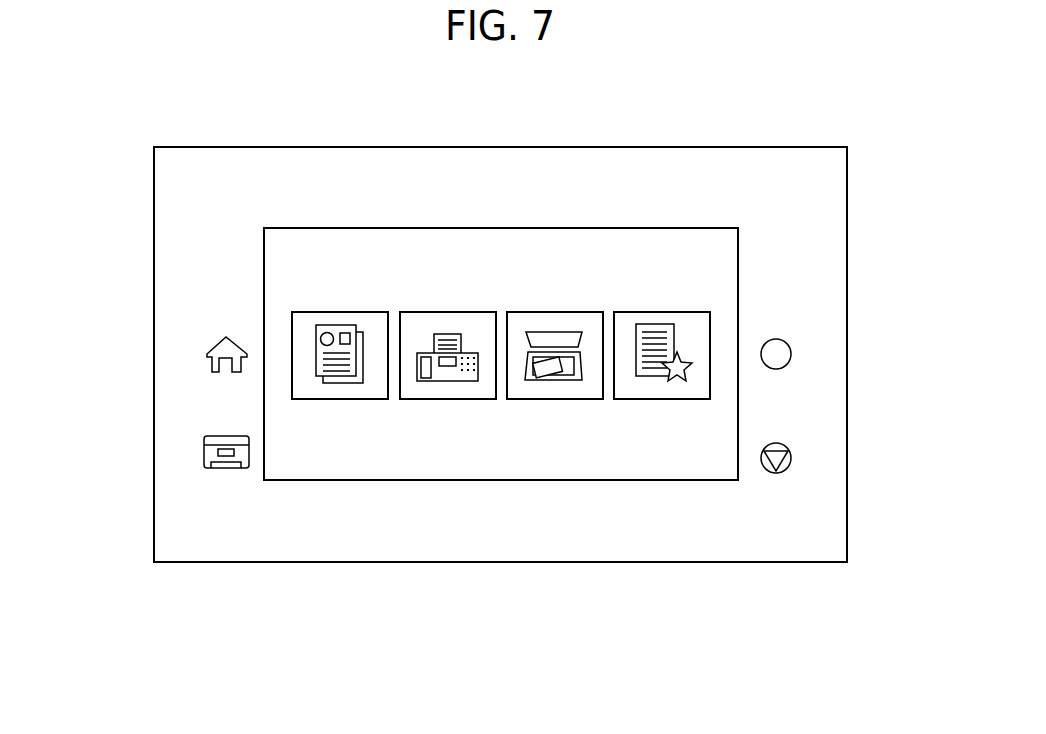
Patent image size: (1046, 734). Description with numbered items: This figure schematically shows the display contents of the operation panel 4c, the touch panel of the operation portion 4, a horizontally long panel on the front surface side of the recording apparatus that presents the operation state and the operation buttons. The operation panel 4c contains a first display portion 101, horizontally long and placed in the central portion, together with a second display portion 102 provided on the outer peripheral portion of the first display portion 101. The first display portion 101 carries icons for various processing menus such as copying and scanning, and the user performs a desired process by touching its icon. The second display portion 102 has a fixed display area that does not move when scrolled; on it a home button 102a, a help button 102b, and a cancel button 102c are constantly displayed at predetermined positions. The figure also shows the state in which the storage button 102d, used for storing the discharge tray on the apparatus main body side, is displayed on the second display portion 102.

The operation portion 4 is at (829, 131).
The operation panel 4c is at (172, 252).
The first display portion 101 is at (399, 455).
The second display portion 102 is at (312, 538).
The home button 102a is at (206, 354).
The help button 102b is at (791, 352).
The cancel button 102c is at (791, 452).
The storage button 102d is at (204, 450).